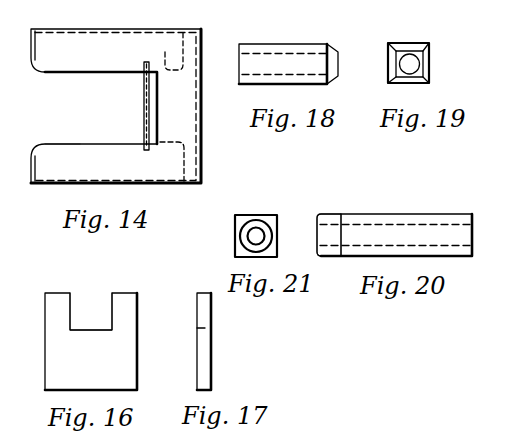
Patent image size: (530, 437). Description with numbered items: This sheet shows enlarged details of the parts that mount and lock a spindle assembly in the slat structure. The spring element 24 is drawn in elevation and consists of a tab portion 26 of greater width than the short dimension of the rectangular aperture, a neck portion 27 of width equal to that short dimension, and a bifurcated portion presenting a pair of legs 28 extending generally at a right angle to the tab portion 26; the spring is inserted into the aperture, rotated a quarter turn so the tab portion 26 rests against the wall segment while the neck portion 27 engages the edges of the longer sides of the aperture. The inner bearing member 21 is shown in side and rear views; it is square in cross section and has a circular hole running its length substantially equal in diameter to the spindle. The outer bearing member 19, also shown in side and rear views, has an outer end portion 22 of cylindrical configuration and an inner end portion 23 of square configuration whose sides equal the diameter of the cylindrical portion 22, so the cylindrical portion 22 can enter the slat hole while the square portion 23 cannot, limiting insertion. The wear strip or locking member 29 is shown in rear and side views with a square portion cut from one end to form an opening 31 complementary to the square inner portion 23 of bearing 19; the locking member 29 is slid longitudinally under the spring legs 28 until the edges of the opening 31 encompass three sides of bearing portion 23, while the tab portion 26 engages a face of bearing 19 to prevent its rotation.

In FIG. 21, the outer bearing member 19 is at (279, 201).
In FIG. 20, the outer bearing member 19 is at (453, 206).
In FIG. 18, the inner bearing member 21 is at (306, 44).
In FIG. 19, the inner bearing member 21 is at (412, 43).
In FIG. 21, the outer end portion 22 is at (237, 223).
In FIG. 20, the outer end portion 22 is at (326, 207).
In FIG. 21, the inner end portion 23 is at (236, 254).
In FIG. 20, the inner end portion 23 is at (377, 207).
In FIG. 14, the spring element 24 is at (128, 174).
In FIG. 14, the tab portion 26 is at (144, 104).
In FIG. 14, the neck portion 27 is at (166, 63).
In FIG. 14, the legs 28 is at (58, 73).
In FIG. 16, the wear strip or locking member 29 is at (136, 353).
In FIG. 17, the wear strip or locking member 29 is at (197, 345).
In FIG. 16, the opening 31 is at (97, 303).
In FIG. 17, the opening 31 is at (204, 326).